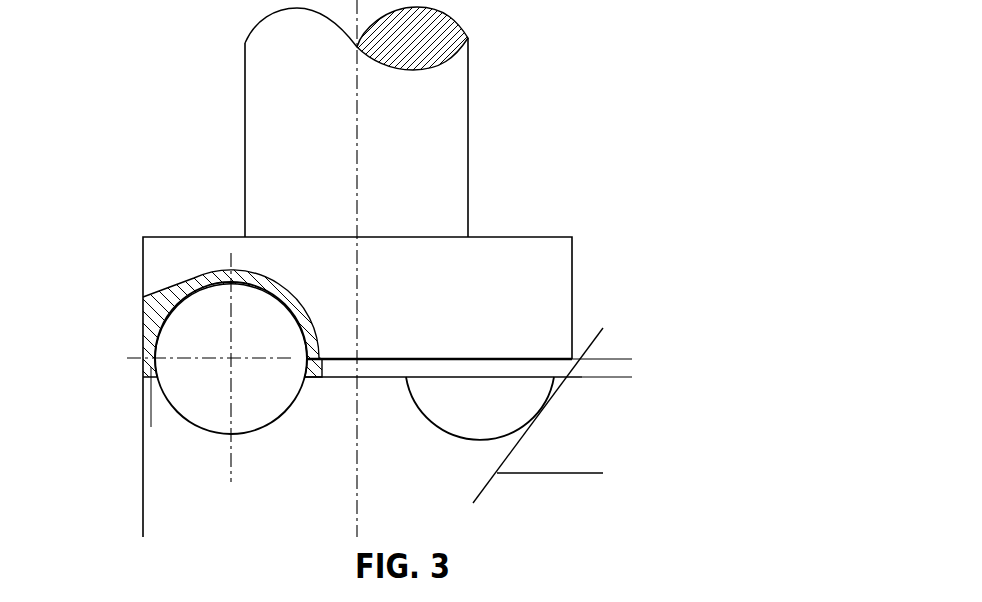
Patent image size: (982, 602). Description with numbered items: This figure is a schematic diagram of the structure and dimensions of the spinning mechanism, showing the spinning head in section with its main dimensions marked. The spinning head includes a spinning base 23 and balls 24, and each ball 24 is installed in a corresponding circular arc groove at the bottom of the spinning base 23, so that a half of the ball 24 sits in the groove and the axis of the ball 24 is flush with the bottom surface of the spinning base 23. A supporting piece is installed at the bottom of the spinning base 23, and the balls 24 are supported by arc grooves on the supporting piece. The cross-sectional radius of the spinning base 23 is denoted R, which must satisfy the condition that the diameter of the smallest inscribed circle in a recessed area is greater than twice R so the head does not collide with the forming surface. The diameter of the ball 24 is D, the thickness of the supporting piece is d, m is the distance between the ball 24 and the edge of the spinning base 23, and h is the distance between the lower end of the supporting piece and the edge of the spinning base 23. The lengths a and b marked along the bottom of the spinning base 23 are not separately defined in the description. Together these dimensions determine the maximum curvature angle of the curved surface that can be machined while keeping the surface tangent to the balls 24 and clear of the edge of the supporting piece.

The spinning base 23 is at (521, 121).
The ball 24 is at (601, 315).
The diameter of the ball D is at (301, 328).
The cross-sectional radius of the spinning base R is at (357, 523).
The distance from housing wall to ball centre a is at (231, 470).
The distance from ball centre to shaft axis b is at (357, 470).
The thickness of the supporting piece d is at (623, 423).
The distance between the lower end of the supporting piece and the edge of the spinn h is at (205, 415).
The distance between the ball and the edge of the spinning base m is at (205, 308).